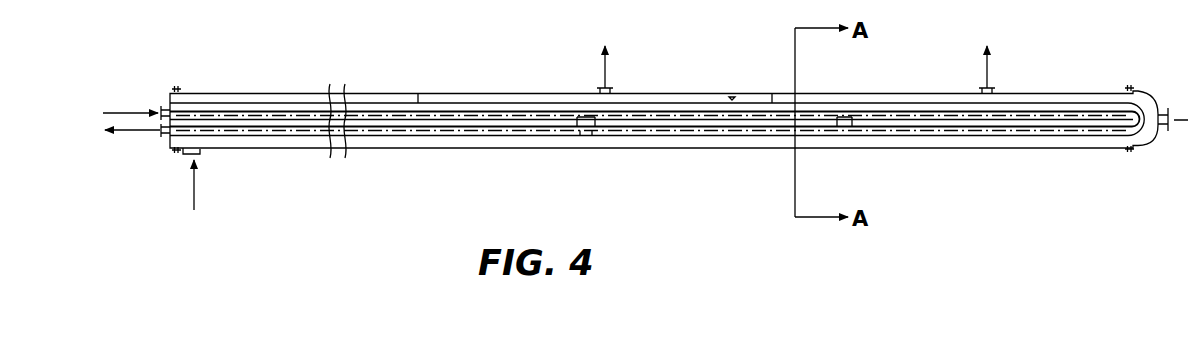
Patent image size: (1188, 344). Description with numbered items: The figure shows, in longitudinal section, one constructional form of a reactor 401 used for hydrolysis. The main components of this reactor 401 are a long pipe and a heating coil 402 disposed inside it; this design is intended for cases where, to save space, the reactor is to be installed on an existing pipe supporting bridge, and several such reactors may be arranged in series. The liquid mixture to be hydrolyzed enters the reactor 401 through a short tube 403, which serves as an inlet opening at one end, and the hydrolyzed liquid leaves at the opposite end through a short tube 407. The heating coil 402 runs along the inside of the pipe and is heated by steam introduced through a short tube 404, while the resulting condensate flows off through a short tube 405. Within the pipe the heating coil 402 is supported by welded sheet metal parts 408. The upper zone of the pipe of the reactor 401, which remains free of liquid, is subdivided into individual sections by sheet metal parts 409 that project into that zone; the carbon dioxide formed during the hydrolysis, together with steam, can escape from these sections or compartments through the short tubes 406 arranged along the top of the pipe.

The reactor 401 is at (547, 150).
The heating coil 402 is at (225, 115).
The short tube 403 is at (203, 155).
The short tube 404 is at (161, 108).
The short tube 405 is at (162, 138).
The short tubes 406 is at (601, 88).
The short tube 407 is at (1165, 131).
The sheet metal parts 408 is at (591, 122).
The sheet metal parts 409 is at (418, 102).